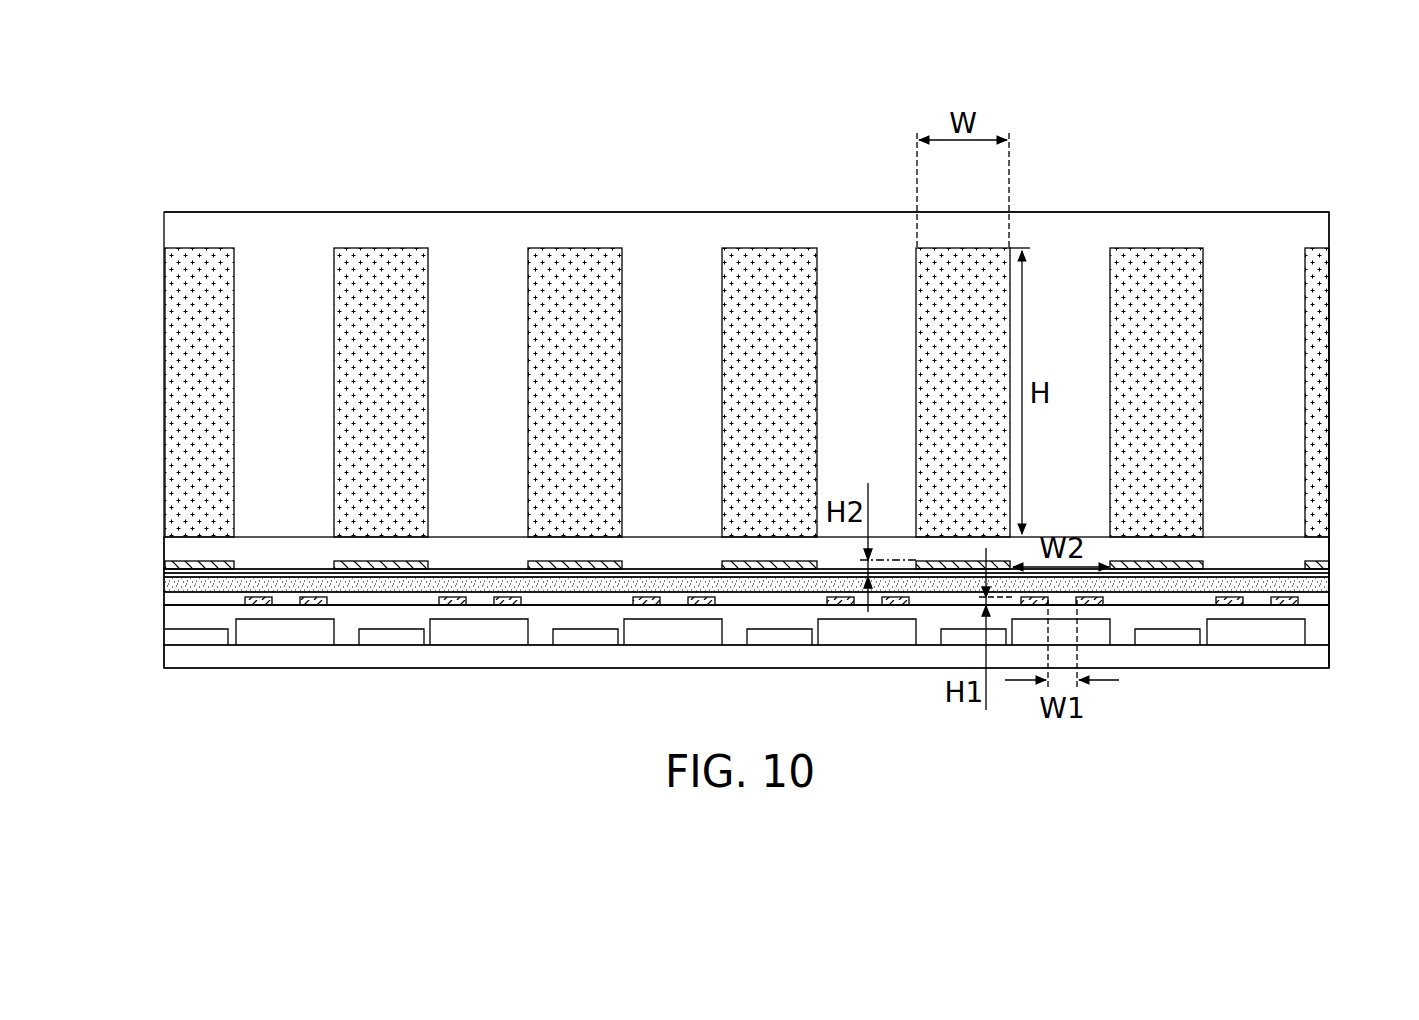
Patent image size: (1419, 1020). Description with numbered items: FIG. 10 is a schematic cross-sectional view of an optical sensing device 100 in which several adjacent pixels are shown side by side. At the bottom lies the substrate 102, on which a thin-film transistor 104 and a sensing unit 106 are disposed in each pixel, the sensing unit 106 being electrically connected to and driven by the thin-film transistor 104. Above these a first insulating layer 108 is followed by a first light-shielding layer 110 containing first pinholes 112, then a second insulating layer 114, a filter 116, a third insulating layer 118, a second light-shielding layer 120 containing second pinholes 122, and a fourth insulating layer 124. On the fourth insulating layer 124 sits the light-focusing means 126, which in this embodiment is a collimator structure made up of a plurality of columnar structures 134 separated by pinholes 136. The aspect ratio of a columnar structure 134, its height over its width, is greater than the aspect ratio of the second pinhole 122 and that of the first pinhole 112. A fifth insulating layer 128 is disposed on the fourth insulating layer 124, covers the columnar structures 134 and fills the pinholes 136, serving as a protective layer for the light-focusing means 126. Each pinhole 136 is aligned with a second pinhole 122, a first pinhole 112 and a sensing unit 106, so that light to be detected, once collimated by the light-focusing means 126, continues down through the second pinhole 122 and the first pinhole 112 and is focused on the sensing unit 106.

The optical sensing device 100 is at (175, 112).
The substrate 102 is at (1325, 655).
The thin-film transistor 104 is at (1168, 637).
The sensing unit 106 is at (1241, 632).
The first insulating layer 108 is at (1325, 625).
The first light-shielding layer 110 is at (1283, 606).
The first pinholes 112 is at (1253, 594).
The second insulating layer 114 is at (1325, 598).
The filter 116 is at (1325, 589).
The third insulating layer 118 is at (1293, 568).
The second light-shielding layer 120 is at (1325, 575).
The second pinholes 122 is at (1225, 558).
The fourth insulating layer 124 is at (1287, 547).
The light-focusing means 126 is at (162, 248).
The fifth insulating layer 128 is at (1329, 232).
The columnar structures 134 is at (743, 407).
The pinholes 136 is at (1060, 284).